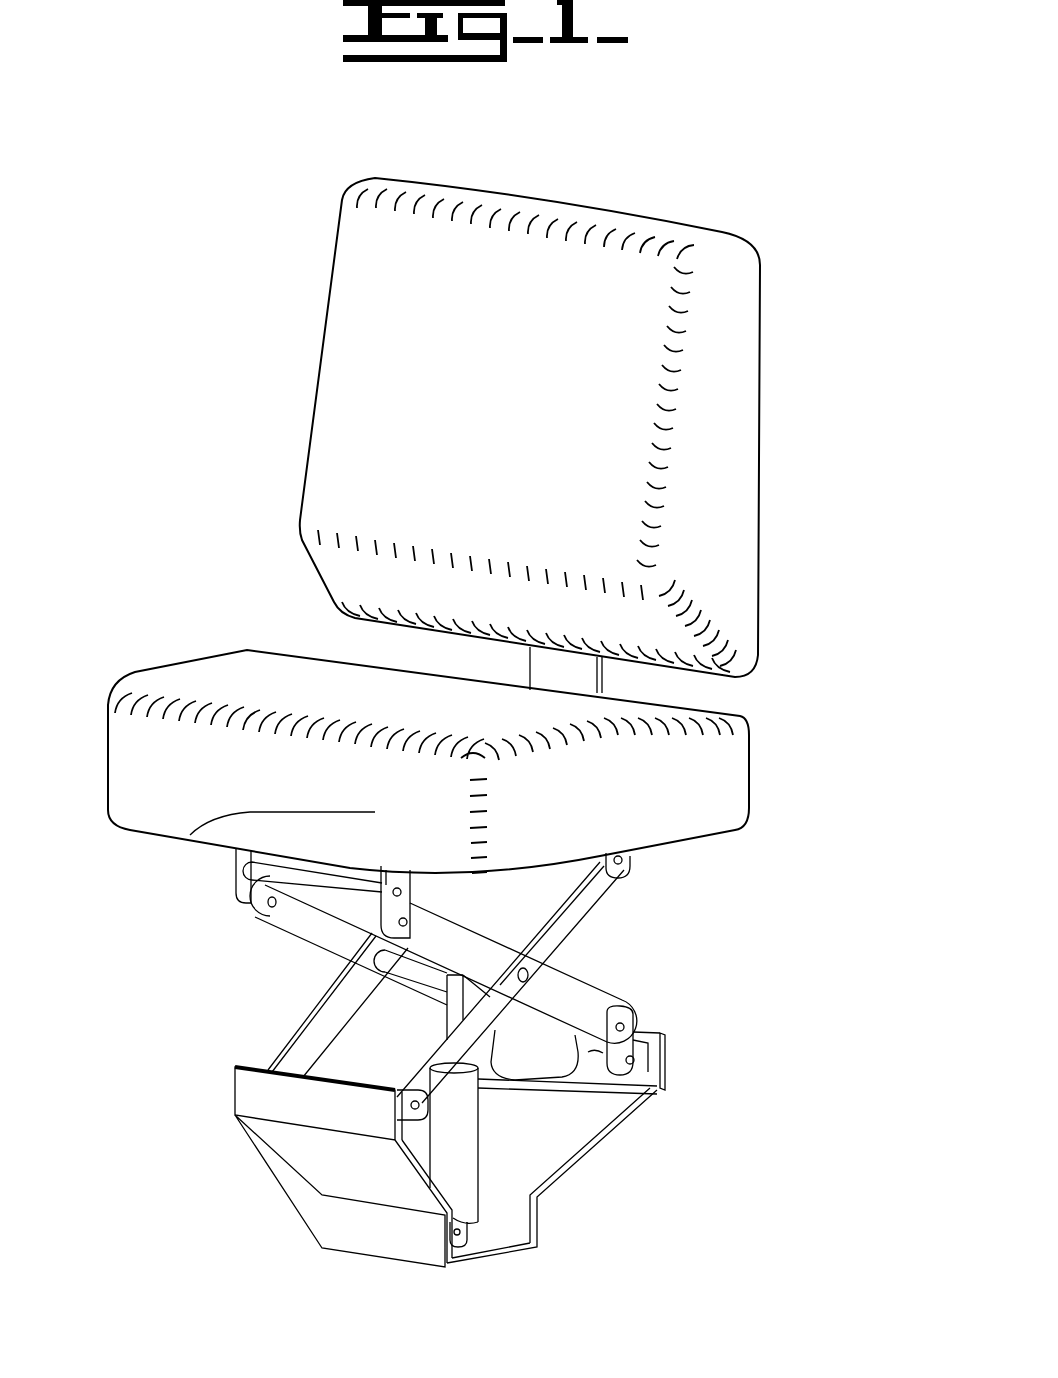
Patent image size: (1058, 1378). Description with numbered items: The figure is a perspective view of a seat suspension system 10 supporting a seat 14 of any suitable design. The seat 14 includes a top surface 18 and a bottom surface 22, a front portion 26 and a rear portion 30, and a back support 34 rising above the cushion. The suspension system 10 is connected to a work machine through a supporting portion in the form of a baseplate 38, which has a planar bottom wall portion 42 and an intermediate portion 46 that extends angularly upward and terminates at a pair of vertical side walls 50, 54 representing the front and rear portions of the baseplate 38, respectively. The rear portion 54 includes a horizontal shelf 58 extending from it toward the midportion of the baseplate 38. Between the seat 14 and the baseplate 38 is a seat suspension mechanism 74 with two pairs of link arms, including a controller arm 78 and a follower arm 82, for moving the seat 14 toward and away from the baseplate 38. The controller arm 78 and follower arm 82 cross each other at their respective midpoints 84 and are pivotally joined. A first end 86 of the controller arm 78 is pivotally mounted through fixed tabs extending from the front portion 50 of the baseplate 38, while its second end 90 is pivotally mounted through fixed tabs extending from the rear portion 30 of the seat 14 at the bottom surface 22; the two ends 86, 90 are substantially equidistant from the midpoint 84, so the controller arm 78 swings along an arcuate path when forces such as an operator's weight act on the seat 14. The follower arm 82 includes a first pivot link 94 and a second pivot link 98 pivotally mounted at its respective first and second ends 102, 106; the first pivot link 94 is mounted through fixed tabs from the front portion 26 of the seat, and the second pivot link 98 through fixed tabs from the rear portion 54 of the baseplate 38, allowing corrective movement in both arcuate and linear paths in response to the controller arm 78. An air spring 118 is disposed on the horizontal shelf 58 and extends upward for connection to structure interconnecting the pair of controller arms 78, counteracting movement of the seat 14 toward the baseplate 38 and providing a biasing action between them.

The seat suspension system 10 is at (805, 933).
The seat 14 is at (663, 763).
The top surface 18 is at (268, 684).
The bottom surface 22 is at (150, 833).
The front portion 26 is at (190, 833).
The rear portion 30 is at (730, 797).
The back support 34 is at (705, 500).
The baseplate 38 is at (350, 1167).
The planar bottom wall portion 42 is at (477, 1263).
The intermediate portion 46 is at (513, 1180).
The vertical side wall (front portion) 50 is at (332, 1113).
The vertical side wall (rear portion) 54 is at (603, 1088).
The horizontal shelf 58 is at (592, 1054).
The seat suspension mechanism 74 is at (580, 924).
The controller arm 78 is at (548, 945).
The follower arm 82 is at (478, 960).
The midpoint 84 is at (483, 1005).
The first end 86 is at (424, 1085).
The second end 90 is at (600, 872).
The first pivot link 94 is at (373, 918).
The second pivot link 98 is at (632, 1032).
The first end 102 is at (628, 997).
The second end 106 is at (462, 947).
The air spring 118 is at (555, 1063).